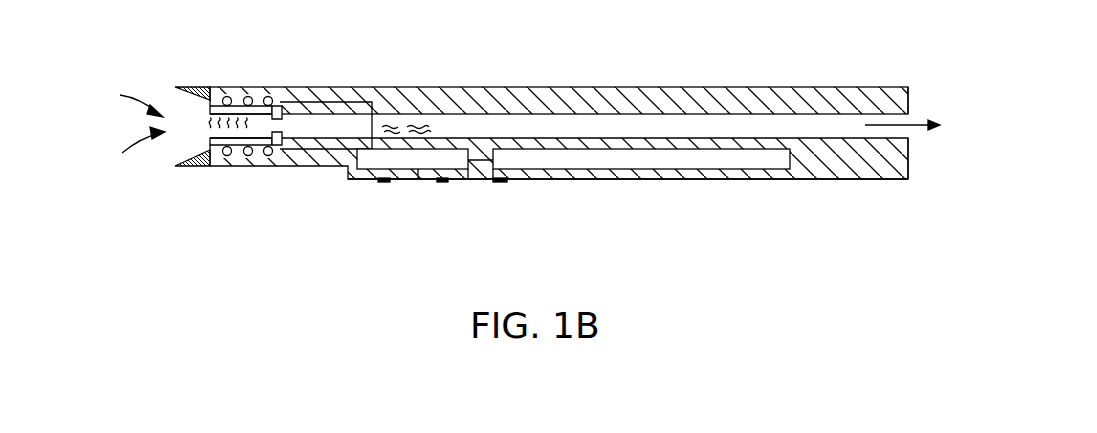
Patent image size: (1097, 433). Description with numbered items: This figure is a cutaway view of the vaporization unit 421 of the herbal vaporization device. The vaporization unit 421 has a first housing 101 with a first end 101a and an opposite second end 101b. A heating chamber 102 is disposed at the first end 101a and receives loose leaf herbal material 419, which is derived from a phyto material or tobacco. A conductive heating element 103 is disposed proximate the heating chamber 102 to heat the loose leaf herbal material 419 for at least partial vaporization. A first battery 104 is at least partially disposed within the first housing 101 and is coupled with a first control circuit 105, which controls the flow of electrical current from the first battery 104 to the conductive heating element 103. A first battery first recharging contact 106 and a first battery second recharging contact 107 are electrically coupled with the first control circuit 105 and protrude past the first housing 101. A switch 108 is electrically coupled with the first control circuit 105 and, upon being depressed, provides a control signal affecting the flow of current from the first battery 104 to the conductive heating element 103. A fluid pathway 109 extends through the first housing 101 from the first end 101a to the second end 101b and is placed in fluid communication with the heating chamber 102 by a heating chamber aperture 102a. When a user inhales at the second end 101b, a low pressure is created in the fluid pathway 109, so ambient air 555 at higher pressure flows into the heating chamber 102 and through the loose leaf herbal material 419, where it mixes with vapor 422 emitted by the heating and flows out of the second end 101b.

The first housing 101 is at (880, 87).
The first end 101a is at (182, 86).
The second end 101b is at (912, 103).
The heating chamber 102 is at (185, 105).
The heating chamber aperture 102a is at (278, 128).
The conductive heating element 103 is at (247, 97).
The first battery 104 is at (672, 160).
The first control circuit 105 is at (418, 176).
The first battery first recharging contact 106 is at (373, 181).
The first battery second recharging contact 107 is at (447, 182).
The switch 108 is at (500, 182).
The fluid pathway 109 is at (568, 123).
The loose leaf herbal material 419 is at (203, 124).
The vaporization unit 421 is at (752, 180).
The vapor 422 is at (413, 128).
The ambient air 555 is at (130, 132).